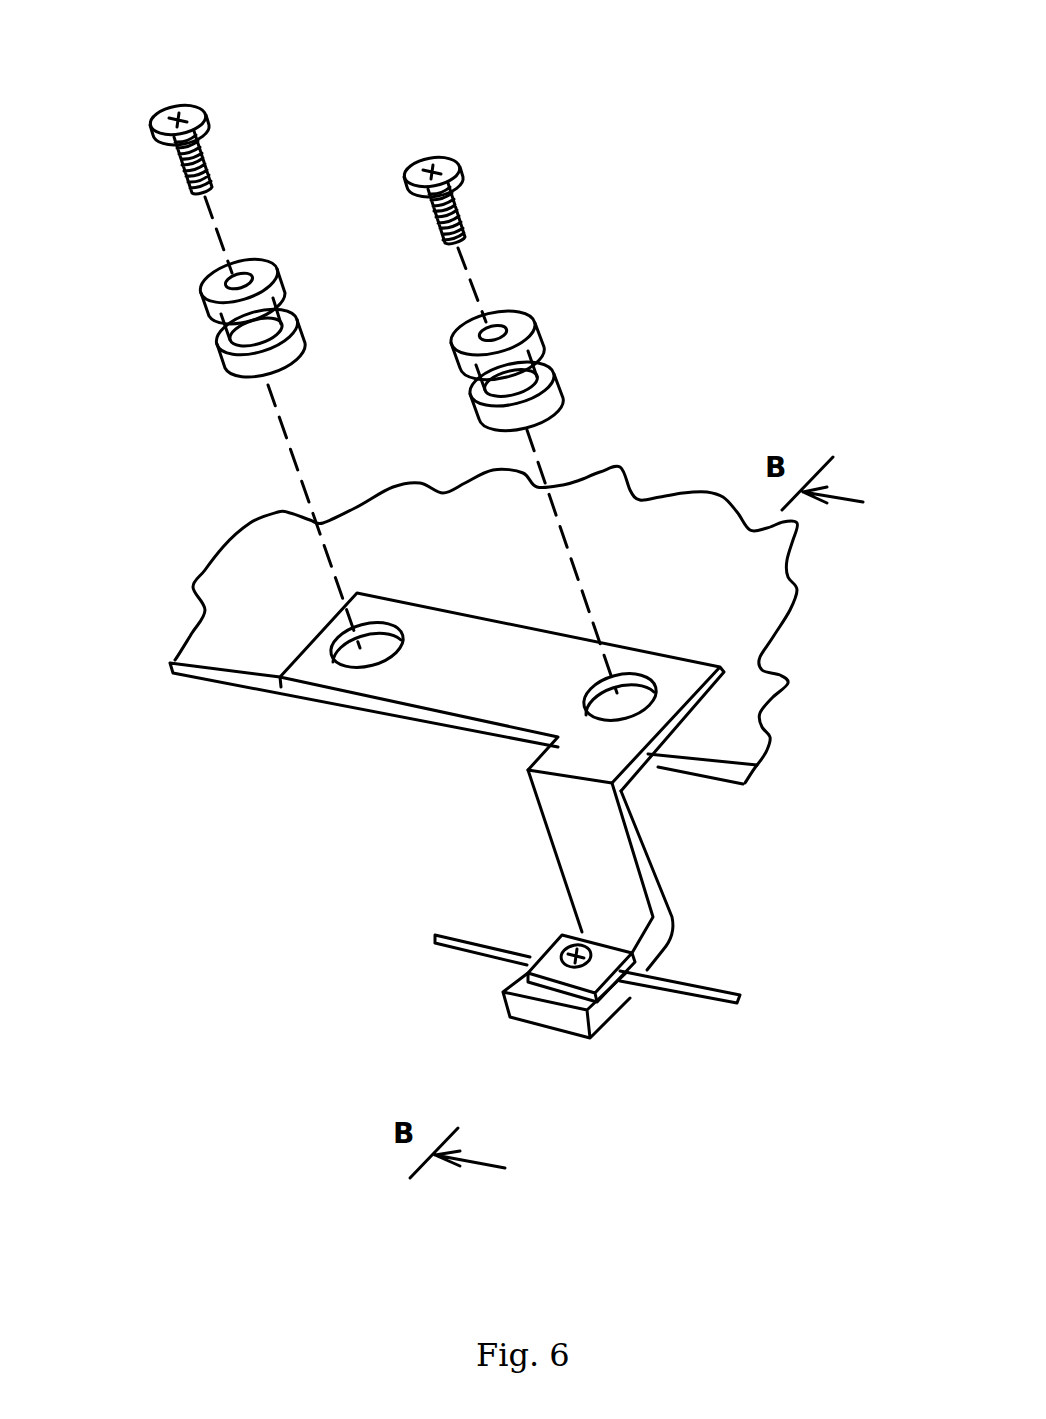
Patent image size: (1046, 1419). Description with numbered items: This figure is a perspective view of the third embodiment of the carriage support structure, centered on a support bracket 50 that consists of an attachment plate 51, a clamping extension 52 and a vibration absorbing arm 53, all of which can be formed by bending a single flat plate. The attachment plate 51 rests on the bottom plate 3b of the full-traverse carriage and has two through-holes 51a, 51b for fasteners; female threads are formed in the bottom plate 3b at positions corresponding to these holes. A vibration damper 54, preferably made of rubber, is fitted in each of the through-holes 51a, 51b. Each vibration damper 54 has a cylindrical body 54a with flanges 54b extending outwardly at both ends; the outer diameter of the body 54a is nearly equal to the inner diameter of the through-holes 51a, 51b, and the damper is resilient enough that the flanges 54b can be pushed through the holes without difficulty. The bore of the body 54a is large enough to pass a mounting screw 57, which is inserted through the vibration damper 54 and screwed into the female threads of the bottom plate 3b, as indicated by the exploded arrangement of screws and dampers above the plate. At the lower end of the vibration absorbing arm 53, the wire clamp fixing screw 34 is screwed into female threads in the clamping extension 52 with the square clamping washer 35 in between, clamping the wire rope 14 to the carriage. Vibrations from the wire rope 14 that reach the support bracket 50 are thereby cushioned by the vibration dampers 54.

The mounting screw 57 is at (192, 107).
The vibration damper 54 is at (376, 264).
The cylindrical body 54a is at (220, 332).
The flange 54b is at (197, 283).
The support bracket 50 is at (584, 779).
The bottom plate 3b is at (232, 643).
The attachment plate 51 is at (584, 739).
The through-hole 51a is at (643, 692).
The through-hole 51b is at (355, 660).
The vibration absorbing arm 53 is at (610, 833).
The wire clamp fixing screw 34 is at (563, 940).
The square clamping washer 35 is at (548, 973).
The clamping extension 52 is at (623, 992).
The wire rope 14 is at (668, 980).